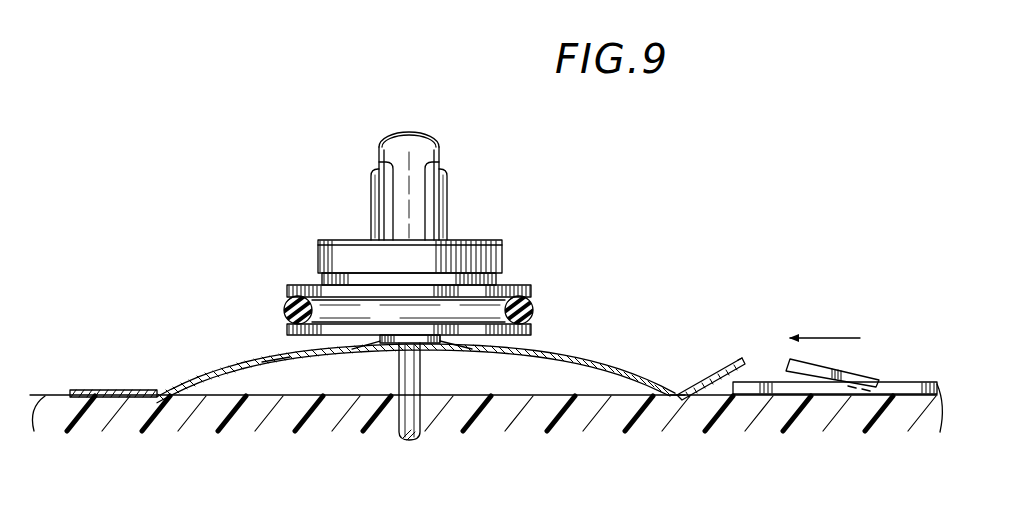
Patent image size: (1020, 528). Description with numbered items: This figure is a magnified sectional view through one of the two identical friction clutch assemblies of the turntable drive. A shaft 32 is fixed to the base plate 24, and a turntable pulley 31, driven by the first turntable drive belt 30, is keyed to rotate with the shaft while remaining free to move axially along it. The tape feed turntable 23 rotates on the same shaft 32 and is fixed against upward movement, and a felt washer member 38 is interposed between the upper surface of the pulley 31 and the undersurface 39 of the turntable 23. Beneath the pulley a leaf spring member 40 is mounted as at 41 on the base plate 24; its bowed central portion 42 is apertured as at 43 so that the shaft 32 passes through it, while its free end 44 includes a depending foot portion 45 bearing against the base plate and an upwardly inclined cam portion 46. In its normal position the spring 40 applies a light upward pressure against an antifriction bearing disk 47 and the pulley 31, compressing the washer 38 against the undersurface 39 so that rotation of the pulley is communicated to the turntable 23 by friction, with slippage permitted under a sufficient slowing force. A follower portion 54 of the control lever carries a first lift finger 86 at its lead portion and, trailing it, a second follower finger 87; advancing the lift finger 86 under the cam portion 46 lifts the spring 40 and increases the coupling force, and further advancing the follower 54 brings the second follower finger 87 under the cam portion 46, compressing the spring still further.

The tape feed turntable 23 is at (508, 258).
The undersurface of the turntable 39 is at (318, 277).
The washer member 38 is at (495, 283).
The first turntable drive belt 30 is at (283, 311).
The turntable pulley 31 is at (533, 287).
The aperture 43 is at (398, 348).
The antifriction bearing disk 47 is at (476, 347).
The leaf spring member 40 is at (582, 358).
The bowed central portion 42 is at (282, 353).
The mounting of leaf spring 41 is at (130, 390).
The shaft 32 is at (422, 372).
The base plate 24 is at (545, 408).
The free end of the leaf spring 44 is at (703, 361).
The upwardly inclined cam portion 46 is at (735, 357).
The depending foot portion 45 is at (683, 397).
The first lift finger 86 is at (765, 396).
The follower portion 54 is at (890, 372).
The second follower finger 87 is at (822, 374).